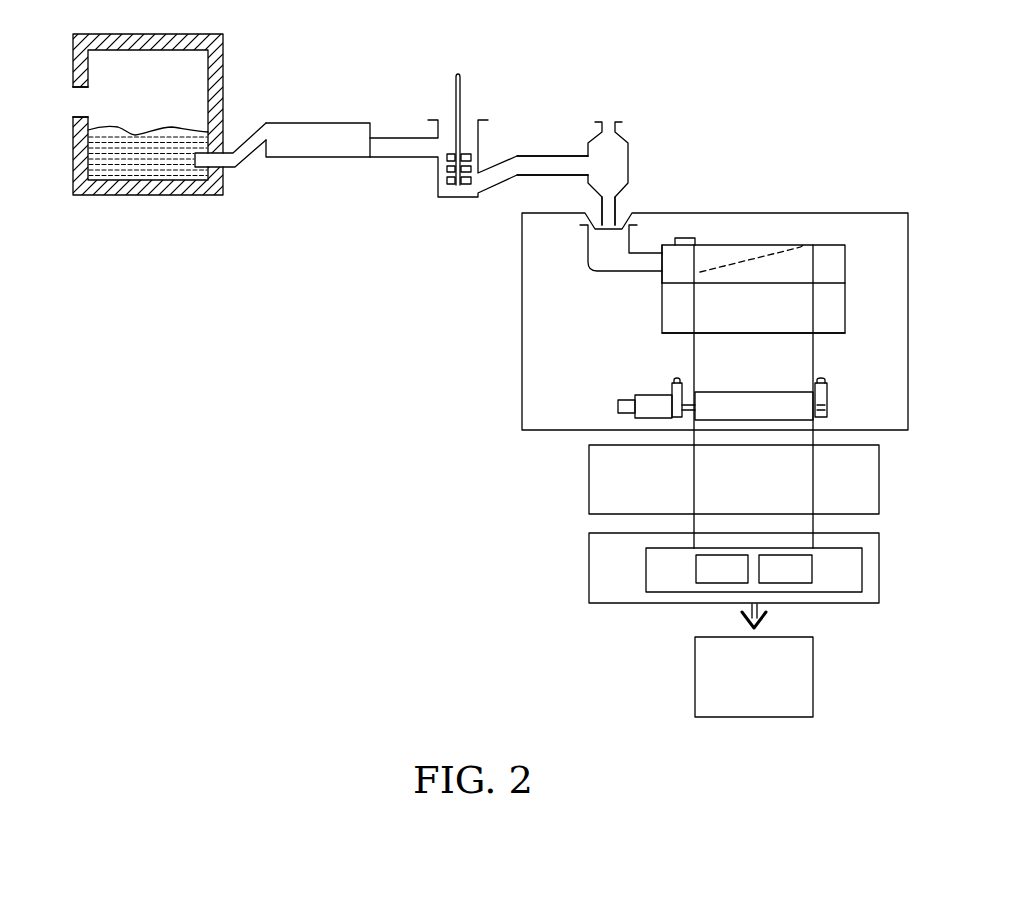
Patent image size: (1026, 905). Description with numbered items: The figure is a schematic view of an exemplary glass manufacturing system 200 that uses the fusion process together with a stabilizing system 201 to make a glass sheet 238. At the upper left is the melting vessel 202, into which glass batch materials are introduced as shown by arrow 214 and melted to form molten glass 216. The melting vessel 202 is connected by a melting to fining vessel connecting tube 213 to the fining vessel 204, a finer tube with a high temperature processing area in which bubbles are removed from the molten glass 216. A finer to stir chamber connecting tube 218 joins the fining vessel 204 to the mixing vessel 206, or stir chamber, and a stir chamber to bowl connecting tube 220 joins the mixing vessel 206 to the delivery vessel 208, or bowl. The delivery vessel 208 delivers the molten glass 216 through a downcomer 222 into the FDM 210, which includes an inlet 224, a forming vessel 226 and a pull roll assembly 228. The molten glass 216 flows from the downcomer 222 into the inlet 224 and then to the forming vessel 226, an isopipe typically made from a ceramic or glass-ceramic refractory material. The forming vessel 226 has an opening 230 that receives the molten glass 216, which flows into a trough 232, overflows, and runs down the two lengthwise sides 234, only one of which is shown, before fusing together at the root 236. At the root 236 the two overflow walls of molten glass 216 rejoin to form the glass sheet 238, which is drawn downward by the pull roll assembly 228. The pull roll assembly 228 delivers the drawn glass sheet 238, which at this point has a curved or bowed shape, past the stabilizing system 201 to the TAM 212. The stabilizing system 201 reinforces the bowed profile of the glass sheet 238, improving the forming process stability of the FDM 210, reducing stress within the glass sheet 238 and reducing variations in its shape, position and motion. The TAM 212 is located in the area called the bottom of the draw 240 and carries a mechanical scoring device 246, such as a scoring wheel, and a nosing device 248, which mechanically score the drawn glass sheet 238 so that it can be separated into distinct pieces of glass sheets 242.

The glass manufacturing system 200 is at (729, 55).
The stabilizing system 201 is at (589, 481).
The melting vessel 202 is at (145, 33).
The fining vessel 204 is at (301, 122).
The mixing vessel 206 is at (482, 140).
The delivery vessel 208 is at (629, 150).
The FDM 210 is at (522, 328).
The TAM 212 is at (646, 571).
The melting to fining vessel connecting tube 213 is at (243, 143).
The arrow 214 is at (86, 103).
The molten glass 216 is at (172, 127).
The finer to stir chamber connecting tube 218 is at (417, 158).
The stir chamber to bowl connecting tube 220 is at (559, 175).
The downcomer 222 is at (616, 201).
The inlet 224 is at (590, 268).
The forming vessel 226 is at (847, 263).
The pull roll assembly 228 is at (828, 403).
The opening 230 is at (661, 277).
The trough 232 is at (728, 257).
The lengthwise sides 234 is at (713, 317).
The root 236 is at (777, 333).
The glass sheet 238 is at (694, 363).
The bottom of the draw 240 is at (589, 569).
The glass sheets 242 is at (695, 668).
The mechanical scoring device 246 is at (722, 570).
The nosing device 248 is at (785, 570).